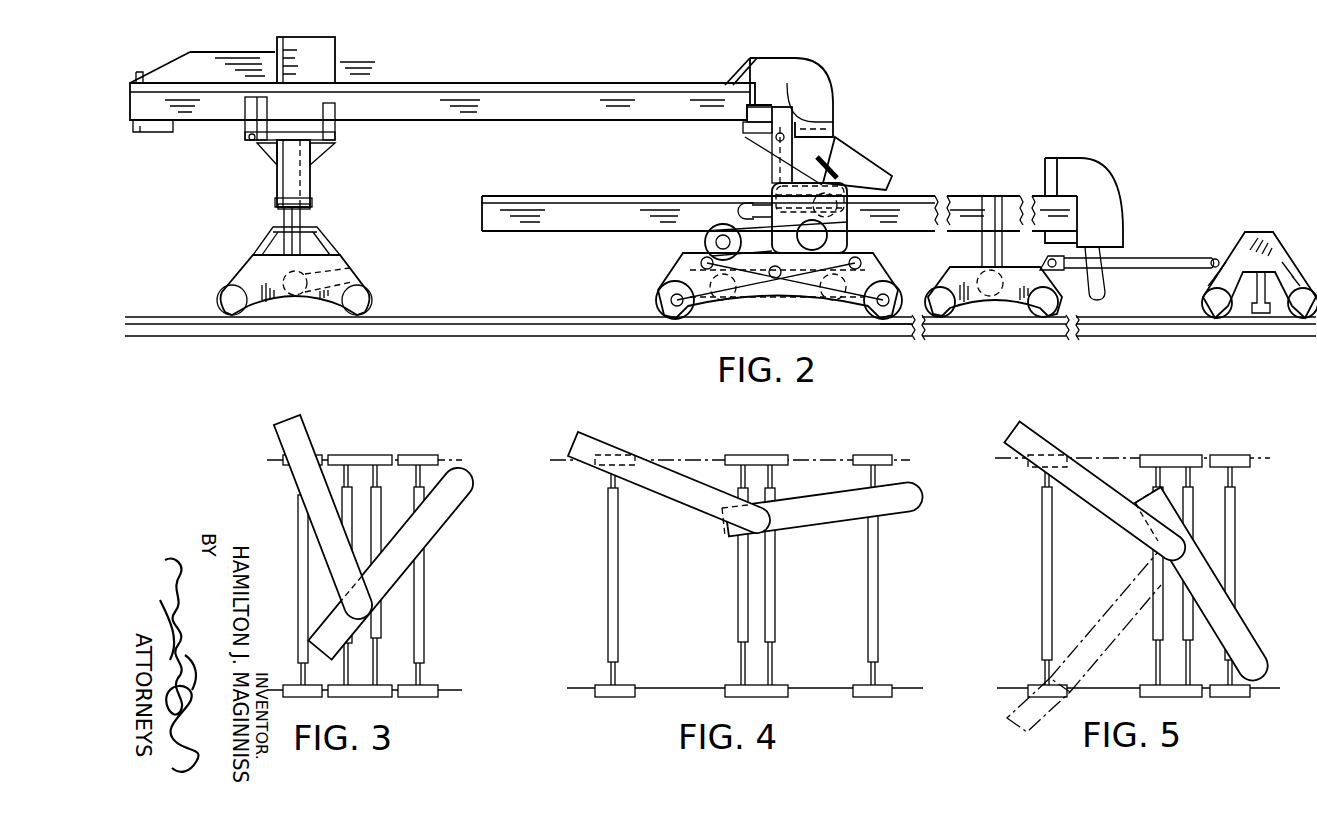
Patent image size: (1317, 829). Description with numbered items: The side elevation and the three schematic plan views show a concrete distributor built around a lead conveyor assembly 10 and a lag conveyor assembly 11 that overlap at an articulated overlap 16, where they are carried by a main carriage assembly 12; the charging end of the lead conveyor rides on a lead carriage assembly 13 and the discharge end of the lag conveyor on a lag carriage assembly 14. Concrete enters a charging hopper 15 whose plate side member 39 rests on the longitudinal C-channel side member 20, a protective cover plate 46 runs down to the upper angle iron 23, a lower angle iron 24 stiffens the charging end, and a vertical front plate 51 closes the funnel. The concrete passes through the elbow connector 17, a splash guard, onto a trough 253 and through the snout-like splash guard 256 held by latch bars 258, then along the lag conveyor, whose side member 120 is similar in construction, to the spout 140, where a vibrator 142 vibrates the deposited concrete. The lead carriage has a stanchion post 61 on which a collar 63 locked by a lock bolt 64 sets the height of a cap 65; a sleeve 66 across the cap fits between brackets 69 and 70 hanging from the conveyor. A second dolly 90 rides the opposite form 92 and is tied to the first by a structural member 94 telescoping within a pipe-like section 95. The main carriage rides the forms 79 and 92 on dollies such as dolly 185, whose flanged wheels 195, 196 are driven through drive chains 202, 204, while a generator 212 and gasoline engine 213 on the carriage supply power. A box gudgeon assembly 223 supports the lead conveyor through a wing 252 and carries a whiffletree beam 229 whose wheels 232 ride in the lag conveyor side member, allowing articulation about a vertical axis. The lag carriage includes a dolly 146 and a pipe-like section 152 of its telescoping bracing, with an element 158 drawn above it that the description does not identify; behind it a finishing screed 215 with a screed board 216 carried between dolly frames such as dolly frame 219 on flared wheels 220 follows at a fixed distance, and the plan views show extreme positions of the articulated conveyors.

In FIG. 2, the lead conveyor assembly 10 is at (473, 83).
In FIG. 3, the lead conveyor assembly 10 is at (315, 500).
In FIG. 4, the lead conveyor assembly 10 is at (693, 496).
In FIG. 5, the lead conveyor assembly 10 is at (1115, 512).
In FIG. 3, the lag conveyor assembly 11 is at (422, 540).
In FIG. 4, the lag conveyor assembly 11 is at (850, 510).
In FIG. 5, the lag conveyor assembly 11 is at (1235, 633).
In FIG. 2, the main carriage assembly 12 is at (888, 260).
In FIG. 3, the main carriage assembly 12 is at (388, 629).
In FIG. 4, the main carriage assembly 12 is at (778, 636).
In FIG. 5, the main carriage assembly 12 is at (1148, 640).
In FIG. 2, the lead carriage assembly 13 is at (368, 238).
In FIG. 3, the lead carriage assembly 13 is at (295, 556).
In FIG. 4, the lead carriage assembly 13 is at (622, 613).
In FIG. 5, the lead carriage assembly 13 is at (1038, 574).
In FIG. 2, the lag carriage assembly 14 is at (1000, 330).
In FIG. 3, the lag carriage assembly 14 is at (428, 605).
In FIG. 4, the lag carriage assembly 14 is at (880, 638).
In FIG. 5, the lag carriage assembly 14 is at (1240, 576).
In FIG. 2, the charging hopper 15 is at (335, 44).
In FIG. 2, the articulated overlap 16 is at (858, 134).
In FIG. 2, the elbow connector 17 is at (820, 90).
In FIG. 2, the longitudinal C-channel side member 20 is at (487, 89).
In FIG. 2, the upper angle iron 23 is at (139, 72).
In FIG. 2, the lower angle iron 24 is at (160, 135).
In FIG. 2, the plate side member 39 is at (215, 52).
In FIG. 2, the protective cover plate 46 is at (178, 63).
In FIG. 2, the vertical front plate 51 is at (335, 70).
In FIG. 2, the stanchion post 61 is at (302, 223).
In FIG. 2, the collar 63 is at (280, 208).
In FIG. 2, the lock bolt 64 is at (312, 204).
In FIG. 2, the elongated cap 65 is at (283, 180).
In FIG. 2, the sleeve 66 is at (323, 148).
In FIG. 2, the bracket 69 is at (245, 130).
In FIG. 2, the bracket 70 is at (335, 133).
In FIG. 3, the form 79 is at (268, 460).
In FIG. 4, the form 79 is at (703, 460).
In FIG. 5, the form 79 is at (1122, 458).
In FIG. 2, the dolly 90 is at (247, 273).
In FIG. 2, the form 92 is at (478, 317).
In FIG. 3, the form 92 is at (452, 690).
In FIG. 4, the form 92 is at (685, 690).
In FIG. 5, the form 92 is at (1010, 690).
In FIG. 2, the structural member 94 is at (358, 291).
In FIG. 2, the pipe-like section 95 is at (352, 271).
In FIG. 2, the longitudinal C-channel side member 120 is at (574, 210).
In FIG. 2, the spout 140 is at (1110, 171).
In FIG. 2, the vibrator 142 is at (1106, 285).
In FIG. 2, the dolly 146 is at (1010, 293).
In FIG. 2, the pipe-like section 152 is at (1025, 322).
In FIG. 2, the post 158 is at (1018, 187).
In FIG. 2, the dolly 185 is at (692, 262).
In FIG. 2, the flanged wheel 195 is at (900, 325).
In FIG. 2, the flanged wheel 196 is at (666, 294).
In FIG. 2, the drive chain 202 is at (870, 310).
In FIG. 2, the drive chain 204 is at (700, 314).
In FIG. 2, the generator 212 is at (706, 240).
In FIG. 2, the gasoline engine 213 is at (842, 240).
In FIG. 2, the finishing screed 215 is at (1240, 222).
In FIG. 2, the screed board 216 is at (1262, 316).
In FIG. 2, the dolly frame 219 is at (1262, 232).
In FIG. 2, the flared wheels 220 is at (1208, 316).
In FIG. 2, the box gudgeon assembly 223 is at (770, 172).
In FIG. 2, the whiffletree beam 229 is at (776, 194).
In FIG. 2, the wheel 232 is at (737, 214).
In FIG. 2, the wing 252 is at (745, 114).
In FIG. 2, the trough 253 is at (757, 141).
In FIG. 2, the snout-like splash guard 256 is at (880, 172).
In FIG. 2, the latch bar 258 is at (842, 165).